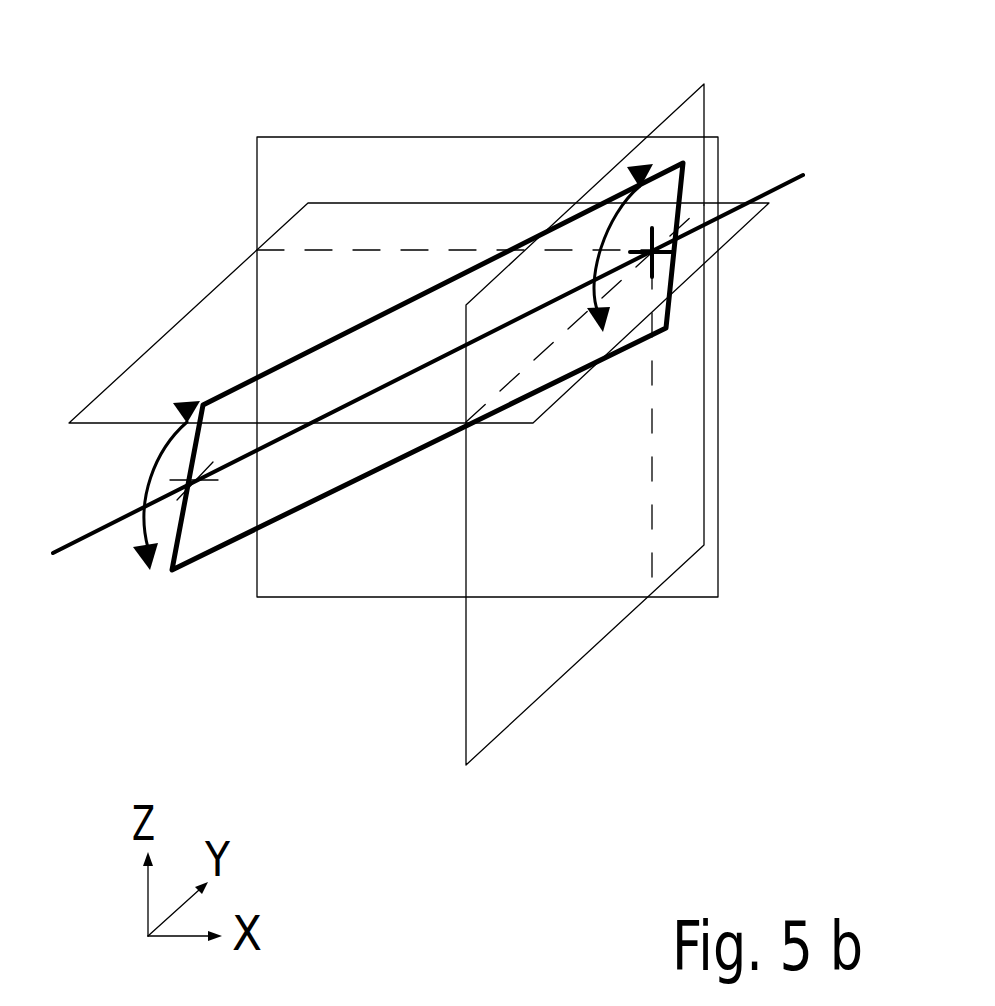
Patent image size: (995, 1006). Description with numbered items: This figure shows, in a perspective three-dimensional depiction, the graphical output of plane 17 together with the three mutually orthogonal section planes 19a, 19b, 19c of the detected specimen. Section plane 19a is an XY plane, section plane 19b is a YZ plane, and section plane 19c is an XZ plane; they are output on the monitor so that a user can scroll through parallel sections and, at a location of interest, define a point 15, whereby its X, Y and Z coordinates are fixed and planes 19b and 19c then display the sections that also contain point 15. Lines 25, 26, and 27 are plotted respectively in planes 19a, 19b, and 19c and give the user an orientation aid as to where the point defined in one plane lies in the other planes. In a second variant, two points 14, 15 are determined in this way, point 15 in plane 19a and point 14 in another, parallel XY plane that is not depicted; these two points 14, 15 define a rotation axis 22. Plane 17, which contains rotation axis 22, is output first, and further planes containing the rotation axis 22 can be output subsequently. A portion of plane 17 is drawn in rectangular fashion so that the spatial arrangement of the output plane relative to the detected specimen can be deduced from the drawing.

The point 14 is at (195, 480).
The point 15 is at (672, 250).
The plane 17 is at (552, 260).
The section plane 19a is at (237, 328).
The section plane 19b is at (507, 649).
The section plane 19c is at (349, 573).
The rotation axis 22 is at (747, 200).
The line 25 is at (363, 252).
The line 26 is at (548, 352).
The line 27 is at (652, 476).